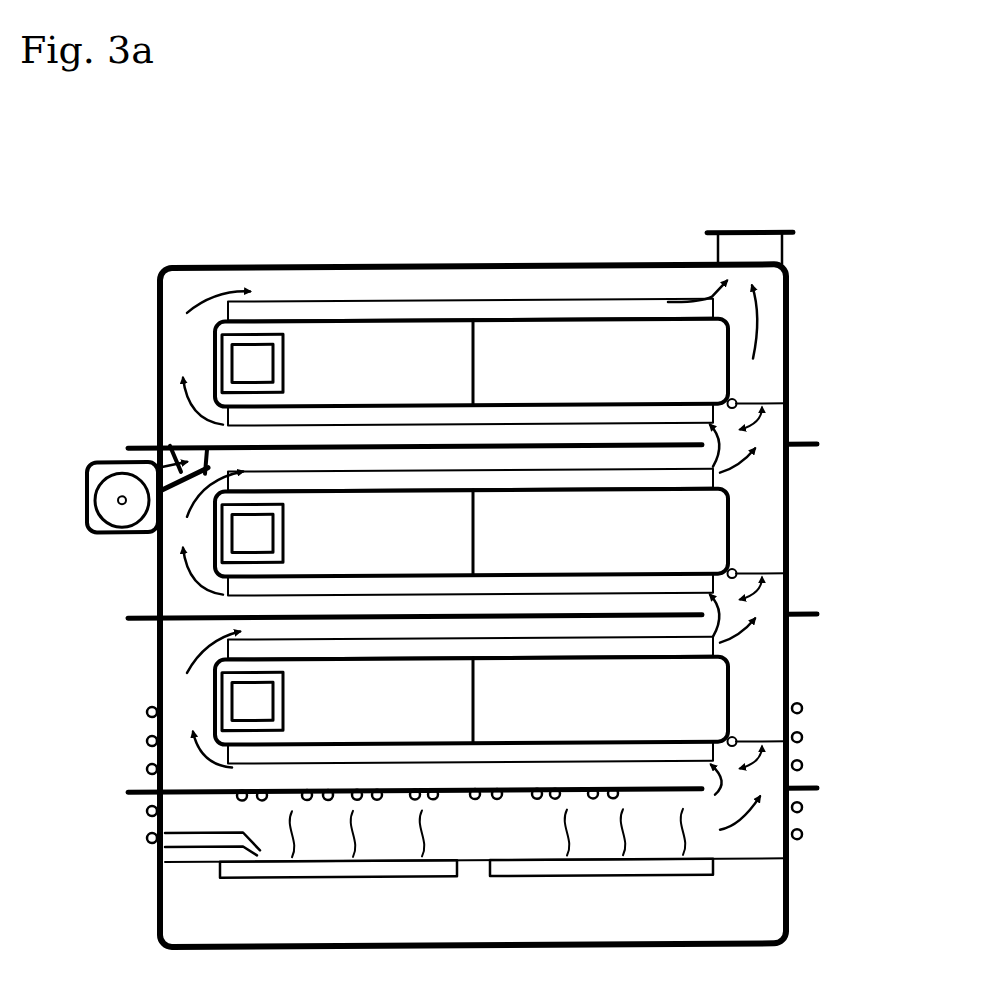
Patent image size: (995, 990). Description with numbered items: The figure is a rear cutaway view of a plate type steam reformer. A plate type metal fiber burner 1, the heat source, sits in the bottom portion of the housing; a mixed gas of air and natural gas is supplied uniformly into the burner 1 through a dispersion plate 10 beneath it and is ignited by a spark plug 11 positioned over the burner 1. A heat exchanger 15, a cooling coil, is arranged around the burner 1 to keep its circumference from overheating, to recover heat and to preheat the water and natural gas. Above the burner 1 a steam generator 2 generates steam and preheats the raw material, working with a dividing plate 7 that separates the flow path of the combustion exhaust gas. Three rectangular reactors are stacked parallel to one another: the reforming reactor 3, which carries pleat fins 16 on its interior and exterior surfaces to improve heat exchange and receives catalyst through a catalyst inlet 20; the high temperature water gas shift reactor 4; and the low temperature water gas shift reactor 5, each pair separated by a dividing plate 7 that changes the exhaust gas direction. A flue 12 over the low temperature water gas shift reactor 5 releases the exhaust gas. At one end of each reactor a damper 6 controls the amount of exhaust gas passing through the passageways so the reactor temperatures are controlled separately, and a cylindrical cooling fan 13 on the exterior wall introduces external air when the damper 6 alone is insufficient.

The burner 1 is at (763, 874).
The steam generator 2 is at (687, 794).
The reforming reactor 3 is at (700, 702).
The high temperature water gas shift reactor 4 is at (713, 532).
The low temperature water gas shift reactor 5 is at (707, 366).
The damper 6 is at (737, 406).
The dividing plate 7 is at (170, 447).
The dispersion plate 10 is at (700, 881).
The spark plug 11 is at (187, 852).
The flue 12 is at (775, 252).
The cooling fan 13 is at (108, 505).
The heat exchanger 15 is at (797, 768).
The pleat fins 16 is at (640, 644).
The catalyst inlet 20 is at (240, 365).